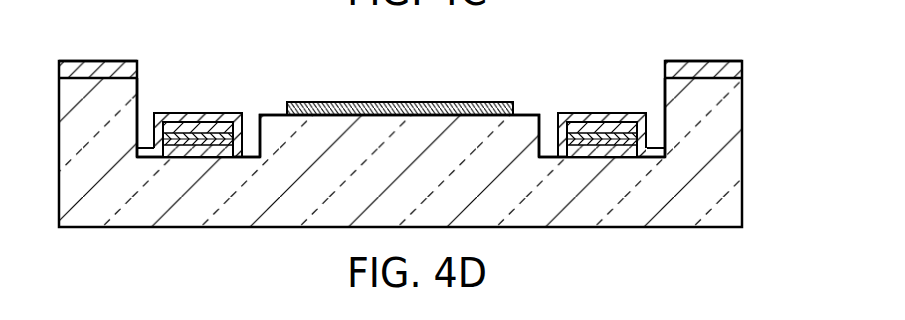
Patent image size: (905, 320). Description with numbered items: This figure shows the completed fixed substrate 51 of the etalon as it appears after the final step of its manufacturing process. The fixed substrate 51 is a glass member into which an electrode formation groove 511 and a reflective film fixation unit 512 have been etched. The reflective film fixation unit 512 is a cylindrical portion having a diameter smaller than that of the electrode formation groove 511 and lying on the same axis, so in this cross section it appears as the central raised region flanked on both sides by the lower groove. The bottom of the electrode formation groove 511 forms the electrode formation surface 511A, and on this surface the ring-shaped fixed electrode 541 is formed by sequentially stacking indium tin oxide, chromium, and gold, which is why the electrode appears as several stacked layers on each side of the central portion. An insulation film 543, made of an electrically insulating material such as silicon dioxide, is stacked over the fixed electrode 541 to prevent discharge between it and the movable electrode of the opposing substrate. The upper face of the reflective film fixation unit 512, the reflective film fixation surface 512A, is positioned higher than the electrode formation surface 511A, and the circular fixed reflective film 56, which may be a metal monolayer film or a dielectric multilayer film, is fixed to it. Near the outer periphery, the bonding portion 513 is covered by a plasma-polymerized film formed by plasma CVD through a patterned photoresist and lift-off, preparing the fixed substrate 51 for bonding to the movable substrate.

The fixed substrate 51 is at (743, 152).
The electrode formation groove 511 is at (132, 113).
The electrode formation surface 511A is at (562, 159).
The reflective film fixation unit 512 is at (267, 127).
The reflective film fixation surface 512A is at (525, 115).
The bonding portion 513 is at (713, 78).
The fixed electrode 541 is at (623, 165).
The insulation film 543 is at (608, 113).
The fixed reflective film 56 is at (425, 102).